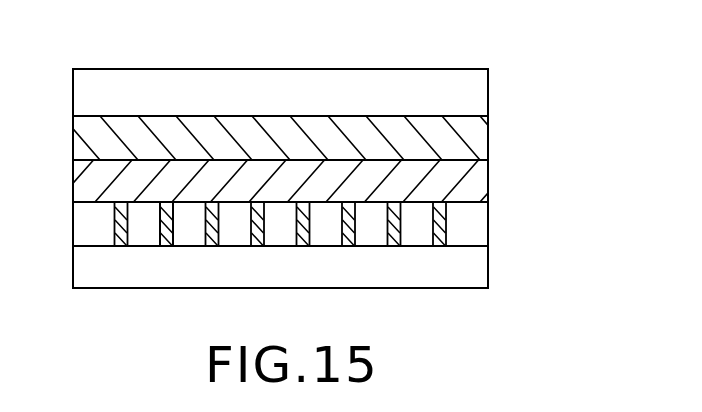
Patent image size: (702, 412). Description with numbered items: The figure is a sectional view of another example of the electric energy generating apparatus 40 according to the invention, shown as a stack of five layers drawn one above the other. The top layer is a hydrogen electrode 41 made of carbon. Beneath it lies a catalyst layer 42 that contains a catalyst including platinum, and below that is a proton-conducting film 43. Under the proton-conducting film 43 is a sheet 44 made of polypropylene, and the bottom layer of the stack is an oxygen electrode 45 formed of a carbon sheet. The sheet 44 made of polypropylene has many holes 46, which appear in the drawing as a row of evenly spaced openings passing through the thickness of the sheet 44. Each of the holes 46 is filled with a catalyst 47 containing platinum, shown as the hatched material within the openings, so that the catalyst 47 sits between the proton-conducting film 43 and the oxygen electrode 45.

The electric energy generating apparatus 40 is at (517, 53).
The hydrogen electrode 41 is at (488, 83).
The catalyst layer 42 is at (488, 128).
The proton-conducting film 43 is at (488, 172).
The sheet 44 is at (488, 218).
The oxygen electrode 45 is at (488, 262).
The holes 46 is at (114, 230).
The catalyst 47 is at (168, 246).